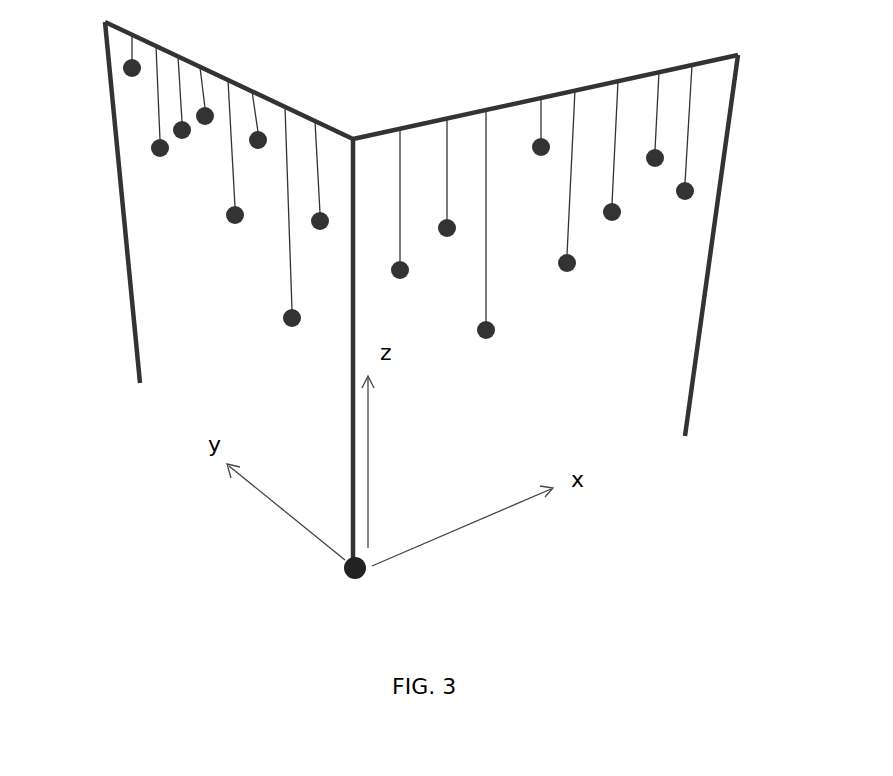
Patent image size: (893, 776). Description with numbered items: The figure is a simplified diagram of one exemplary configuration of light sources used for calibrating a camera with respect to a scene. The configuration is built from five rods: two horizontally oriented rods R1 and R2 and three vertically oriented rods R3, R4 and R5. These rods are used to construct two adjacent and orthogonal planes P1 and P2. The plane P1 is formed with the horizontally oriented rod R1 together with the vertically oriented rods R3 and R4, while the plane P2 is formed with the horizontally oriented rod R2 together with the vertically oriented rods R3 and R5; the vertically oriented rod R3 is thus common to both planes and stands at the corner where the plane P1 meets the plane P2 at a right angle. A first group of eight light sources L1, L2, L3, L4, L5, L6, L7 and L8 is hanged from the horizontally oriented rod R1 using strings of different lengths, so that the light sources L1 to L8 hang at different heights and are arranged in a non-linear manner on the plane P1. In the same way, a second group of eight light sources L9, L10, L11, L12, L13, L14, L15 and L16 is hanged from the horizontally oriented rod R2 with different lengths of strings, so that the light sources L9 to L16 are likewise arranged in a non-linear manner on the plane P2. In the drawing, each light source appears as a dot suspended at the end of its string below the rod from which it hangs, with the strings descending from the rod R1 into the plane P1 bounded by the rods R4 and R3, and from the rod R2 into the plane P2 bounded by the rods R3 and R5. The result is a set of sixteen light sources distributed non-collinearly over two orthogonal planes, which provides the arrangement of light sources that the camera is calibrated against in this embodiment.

The horizontally oriented rod R1 is at (243, 87).
The horizontally oriented rod R2 is at (568, 92).
The vertically oriented rod R3 is at (348, 372).
The vertically oriented rod R4 is at (123, 202).
The vertically oriented rod R5 is at (717, 250).
The plane P1 is at (217, 341).
The plane P2 is at (587, 395).
The light source L1 is at (130, 73).
The light source L2 is at (158, 116).
The light source L3 is at (178, 114).
The light source L4 is at (203, 113).
The light source L5 is at (235, 167).
The light source L6 is at (258, 137).
The light source L7 is at (290, 233).
The light source L8 is at (318, 194).
The light source L9 is at (395, 225).
The light source L10 is at (445, 196).
The light source L11 is at (487, 241).
The light source L12 is at (541, 145).
The light source L13 is at (571, 201).
The light source L14 is at (610, 168).
The light source L15 is at (650, 137).
The light source L16 is at (683, 153).